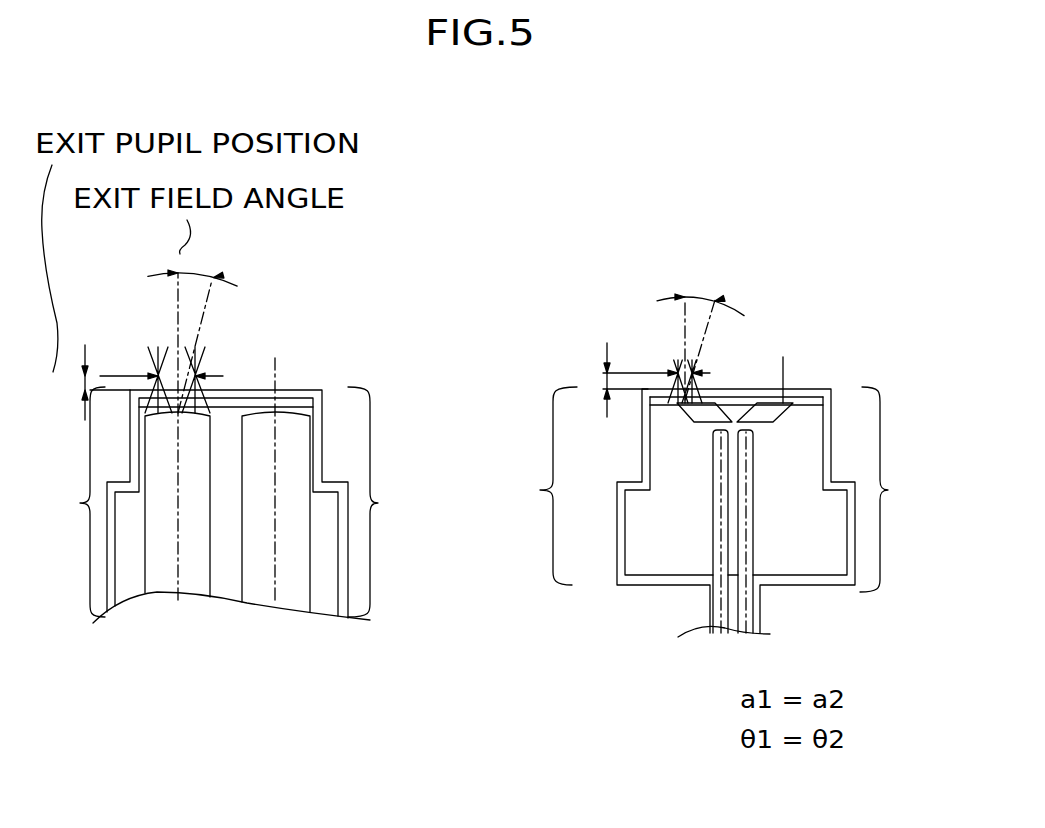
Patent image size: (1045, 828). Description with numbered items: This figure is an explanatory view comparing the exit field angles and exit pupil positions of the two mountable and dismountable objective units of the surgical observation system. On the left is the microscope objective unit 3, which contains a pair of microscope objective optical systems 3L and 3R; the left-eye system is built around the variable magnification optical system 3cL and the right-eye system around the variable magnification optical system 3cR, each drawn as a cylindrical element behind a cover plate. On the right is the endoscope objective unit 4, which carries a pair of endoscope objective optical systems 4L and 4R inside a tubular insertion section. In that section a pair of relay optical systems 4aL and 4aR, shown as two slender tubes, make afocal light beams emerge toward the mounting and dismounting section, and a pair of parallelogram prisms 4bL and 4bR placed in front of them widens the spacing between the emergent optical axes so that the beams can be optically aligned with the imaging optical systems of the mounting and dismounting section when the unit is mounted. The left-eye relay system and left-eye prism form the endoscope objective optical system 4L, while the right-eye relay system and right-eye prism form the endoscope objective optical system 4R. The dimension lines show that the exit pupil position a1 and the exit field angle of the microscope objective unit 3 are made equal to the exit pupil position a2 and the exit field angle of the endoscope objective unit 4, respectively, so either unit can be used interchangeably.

The microscope objective unit 3 is at (305, 334).
The microscope objective optical system for the left eye 3L is at (70, 502).
The microscope objective optical system for the right eye 3R is at (383, 502).
The variable magnification optical system for the left eye 3cL is at (202, 438).
The variable magnification optical system for the right eye 3cR is at (287, 433).
The endoscope objective unit 4 is at (813, 332).
The endoscope objective optical system for the left eye 4L is at (538, 486).
The endoscope objective optical system for the right eye 4R is at (892, 489).
The relay optical system for the left eye 4aL is at (713, 545).
The relay optical system for the right eye 4aR is at (753, 545).
The parallelogram prism for the left eye 4bL is at (698, 425).
The parallelogram prism for the right eye 4bR is at (772, 425).
The exit pupil position a1 is at (136, 382).
The exit pupil position a2 is at (640, 380).